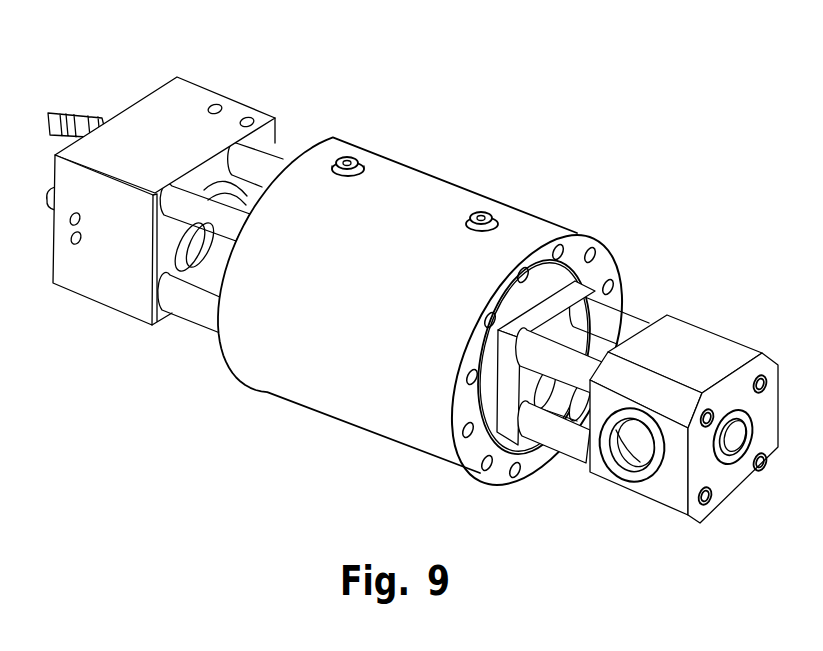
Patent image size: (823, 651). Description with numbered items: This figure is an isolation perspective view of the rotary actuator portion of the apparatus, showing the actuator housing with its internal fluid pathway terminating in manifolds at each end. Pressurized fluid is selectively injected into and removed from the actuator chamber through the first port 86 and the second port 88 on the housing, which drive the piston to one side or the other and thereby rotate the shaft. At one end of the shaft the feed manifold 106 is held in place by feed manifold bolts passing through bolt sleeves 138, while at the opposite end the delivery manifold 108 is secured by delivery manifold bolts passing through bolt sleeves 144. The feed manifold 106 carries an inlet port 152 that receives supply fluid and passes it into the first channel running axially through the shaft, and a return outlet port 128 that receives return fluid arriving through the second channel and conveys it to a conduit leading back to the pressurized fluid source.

The first port 86 is at (483, 213).
The second port 88 is at (348, 158).
The feed manifold 106 is at (696, 401).
The delivery manifold 108 is at (182, 179).
The return outlet port 128 is at (632, 456).
The bolt sleeves 138 is at (628, 315).
The bolt sleeves 144 is at (279, 158).
The inlet port 152 is at (735, 437).